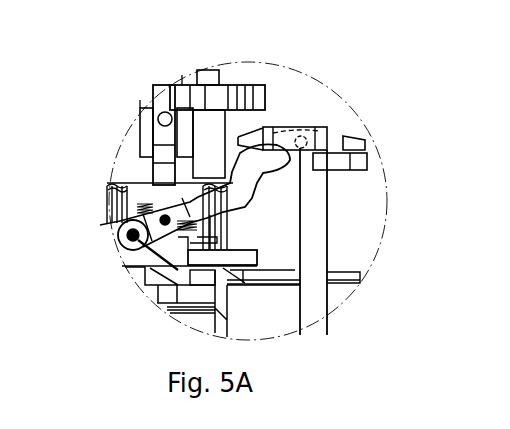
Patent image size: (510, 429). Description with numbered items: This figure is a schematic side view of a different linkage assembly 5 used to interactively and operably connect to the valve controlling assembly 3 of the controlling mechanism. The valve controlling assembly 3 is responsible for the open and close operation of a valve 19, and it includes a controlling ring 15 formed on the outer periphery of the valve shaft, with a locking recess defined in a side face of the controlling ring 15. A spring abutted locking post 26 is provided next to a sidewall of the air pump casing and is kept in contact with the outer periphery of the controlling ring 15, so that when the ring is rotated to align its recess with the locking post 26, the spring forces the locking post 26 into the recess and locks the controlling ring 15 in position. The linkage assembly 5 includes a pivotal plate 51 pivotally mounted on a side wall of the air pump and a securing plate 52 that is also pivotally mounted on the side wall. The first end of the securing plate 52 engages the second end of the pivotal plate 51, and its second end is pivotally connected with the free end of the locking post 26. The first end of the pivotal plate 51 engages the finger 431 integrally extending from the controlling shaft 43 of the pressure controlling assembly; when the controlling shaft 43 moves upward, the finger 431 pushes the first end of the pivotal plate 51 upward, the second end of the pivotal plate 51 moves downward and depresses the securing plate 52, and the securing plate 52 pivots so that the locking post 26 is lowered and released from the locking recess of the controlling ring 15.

The valve controlling assembly 3 is at (250, 80).
The controlling ring 15 is at (167, 90).
The locking post 26 is at (158, 137).
The securing plate 52 is at (197, 202).
The linkage assembly 5 is at (142, 253).
The valve 19 is at (162, 300).
The controlling shaft 43 is at (310, 202).
The finger 431 is at (365, 164).
The pivotal plate 51 is at (350, 142).